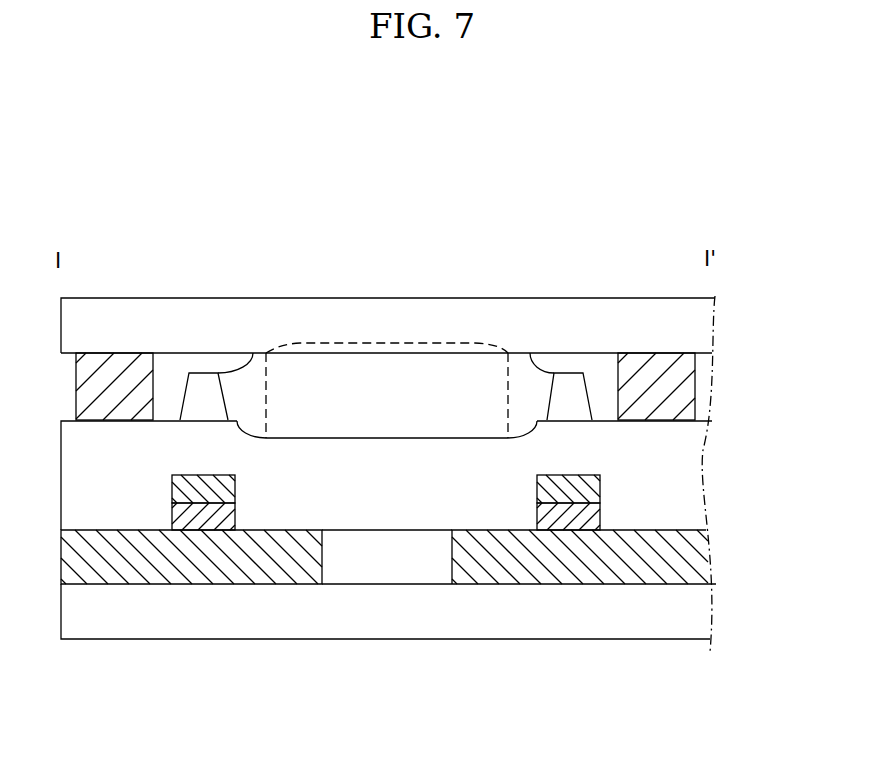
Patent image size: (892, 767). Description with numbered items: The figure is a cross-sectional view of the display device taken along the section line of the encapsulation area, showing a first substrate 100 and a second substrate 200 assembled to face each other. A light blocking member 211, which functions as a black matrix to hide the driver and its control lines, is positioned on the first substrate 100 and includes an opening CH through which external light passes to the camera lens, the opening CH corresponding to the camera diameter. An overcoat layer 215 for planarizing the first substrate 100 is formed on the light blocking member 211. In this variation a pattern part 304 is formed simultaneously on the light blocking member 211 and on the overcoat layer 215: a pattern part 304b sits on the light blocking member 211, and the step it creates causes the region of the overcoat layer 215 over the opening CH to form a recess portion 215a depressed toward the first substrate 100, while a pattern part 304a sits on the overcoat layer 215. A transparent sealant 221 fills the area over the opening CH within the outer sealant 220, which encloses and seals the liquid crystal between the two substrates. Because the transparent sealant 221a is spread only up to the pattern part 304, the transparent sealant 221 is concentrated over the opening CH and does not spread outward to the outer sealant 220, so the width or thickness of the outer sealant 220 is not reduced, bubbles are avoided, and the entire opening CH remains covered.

The first substrate 100 is at (477, 628).
The second substrate 200 is at (702, 330).
The light blocking member 211 is at (232, 565).
The opening CH is at (383, 577).
The overcoat layer 215 is at (697, 447).
The recess portion 215a is at (380, 438).
The outer sealant 220 is at (688, 385).
The transparent sealant 221 is at (386, 342).
The transparent sealant 221a is at (300, 346).
The pattern part 304 is at (386, 366).
The pattern part 304a is at (572, 385).
The pattern part 304b is at (537, 493).